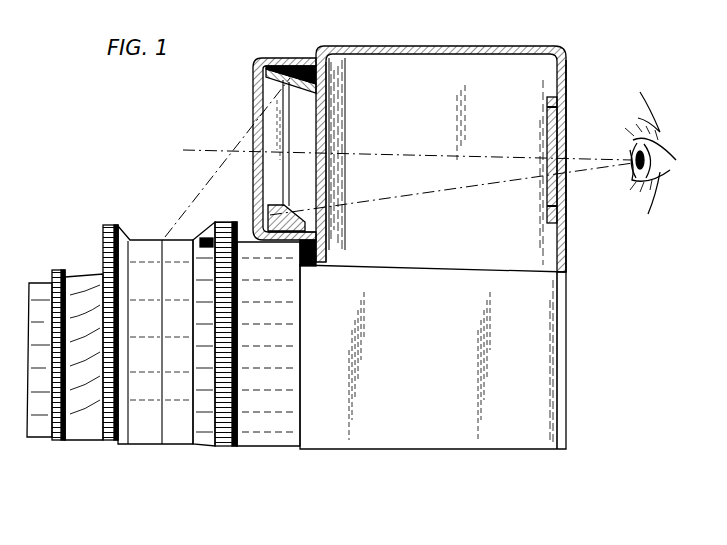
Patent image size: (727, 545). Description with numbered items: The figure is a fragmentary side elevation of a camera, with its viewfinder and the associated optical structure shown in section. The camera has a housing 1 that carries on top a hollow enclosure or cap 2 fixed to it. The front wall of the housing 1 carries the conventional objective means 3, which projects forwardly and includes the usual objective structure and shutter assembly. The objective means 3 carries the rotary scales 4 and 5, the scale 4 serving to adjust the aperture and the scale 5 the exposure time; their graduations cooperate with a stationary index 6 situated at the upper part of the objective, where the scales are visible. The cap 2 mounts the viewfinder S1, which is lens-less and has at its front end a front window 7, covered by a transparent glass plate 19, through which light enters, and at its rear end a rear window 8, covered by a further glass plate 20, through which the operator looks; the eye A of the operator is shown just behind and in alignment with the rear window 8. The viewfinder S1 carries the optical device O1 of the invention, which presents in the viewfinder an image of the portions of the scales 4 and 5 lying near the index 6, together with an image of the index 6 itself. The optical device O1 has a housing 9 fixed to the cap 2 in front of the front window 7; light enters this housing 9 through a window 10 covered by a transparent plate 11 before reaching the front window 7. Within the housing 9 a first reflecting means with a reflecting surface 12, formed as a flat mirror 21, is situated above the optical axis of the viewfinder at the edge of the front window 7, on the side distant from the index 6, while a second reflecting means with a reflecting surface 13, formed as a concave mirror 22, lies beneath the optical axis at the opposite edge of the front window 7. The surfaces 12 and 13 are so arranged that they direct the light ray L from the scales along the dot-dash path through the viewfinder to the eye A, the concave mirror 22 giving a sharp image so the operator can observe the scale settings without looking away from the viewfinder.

The housing 1 is at (552, 348).
The hollow enclosure or cap 2 is at (406, 50).
The objective means 3 is at (77, 440).
The rotary scale 4 is at (143, 430).
The rotary scale 5 is at (181, 433).
The stationary index 6 is at (203, 237).
The front window 7 is at (327, 114).
The rear window 8 is at (567, 141).
The housing 9 is at (300, 57).
The window 10 is at (253, 88).
The transparent plate 11 is at (264, 138).
The reflecting surface 12 is at (281, 82).
The reflecting surface 13 is at (278, 204).
The transparent glass plate 19 is at (330, 133).
The glass plate 20 is at (552, 130).
The flat mirror 21 is at (283, 63).
The concave mirror 22 is at (300, 222).
The optical device O1 is at (293, 52).
The viewfinder S1 is at (464, 76).
The eye of the operator A is at (633, 176).
The light ray L is at (184, 219).